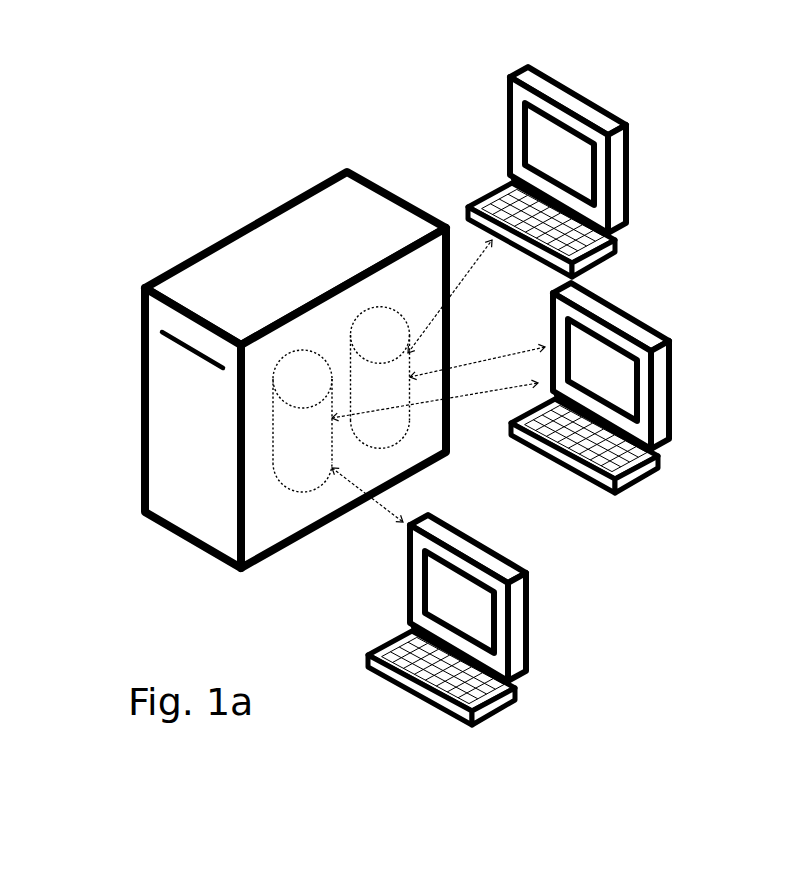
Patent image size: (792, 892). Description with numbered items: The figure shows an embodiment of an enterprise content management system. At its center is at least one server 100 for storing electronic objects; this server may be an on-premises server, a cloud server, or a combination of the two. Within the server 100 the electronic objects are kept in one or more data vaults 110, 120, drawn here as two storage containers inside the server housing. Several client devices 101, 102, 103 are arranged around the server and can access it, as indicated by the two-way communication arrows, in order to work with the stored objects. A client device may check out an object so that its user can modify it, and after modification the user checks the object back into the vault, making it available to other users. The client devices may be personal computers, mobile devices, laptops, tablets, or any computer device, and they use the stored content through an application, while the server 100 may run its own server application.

The server 100 is at (295, 370).
The client device 101 is at (597, 107).
The client device 102 is at (593, 292).
The client device 103 is at (527, 643).
The data vault 110 is at (302, 421).
The data vault 120 is at (380, 378).